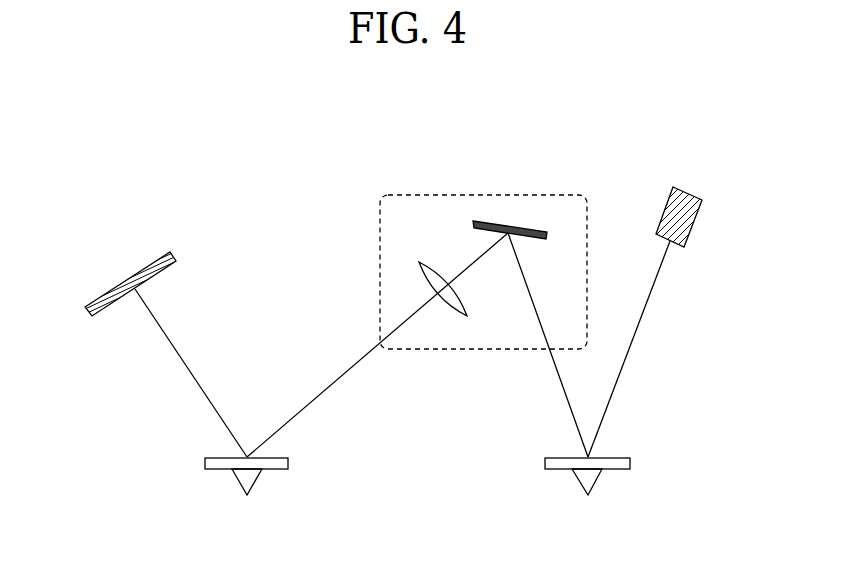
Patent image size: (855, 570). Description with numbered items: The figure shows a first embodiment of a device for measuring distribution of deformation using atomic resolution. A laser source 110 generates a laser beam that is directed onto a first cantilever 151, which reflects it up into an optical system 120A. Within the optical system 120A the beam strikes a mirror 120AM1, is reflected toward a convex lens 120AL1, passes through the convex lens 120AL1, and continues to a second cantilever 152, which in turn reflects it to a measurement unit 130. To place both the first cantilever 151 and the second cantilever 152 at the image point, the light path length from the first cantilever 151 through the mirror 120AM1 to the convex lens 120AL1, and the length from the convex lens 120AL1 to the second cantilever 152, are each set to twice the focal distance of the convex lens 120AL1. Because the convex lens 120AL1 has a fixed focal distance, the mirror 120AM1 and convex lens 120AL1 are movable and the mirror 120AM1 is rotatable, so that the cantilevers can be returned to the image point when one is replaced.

The laser source 110 is at (690, 192).
The optical system 120A is at (552, 193).
The mirror 120AM1 is at (495, 222).
The convex lens 120AL1 is at (428, 280).
The measurement unit 130 is at (128, 277).
The first cantilever 151 is at (588, 478).
The second cantilever 152 is at (243, 480).